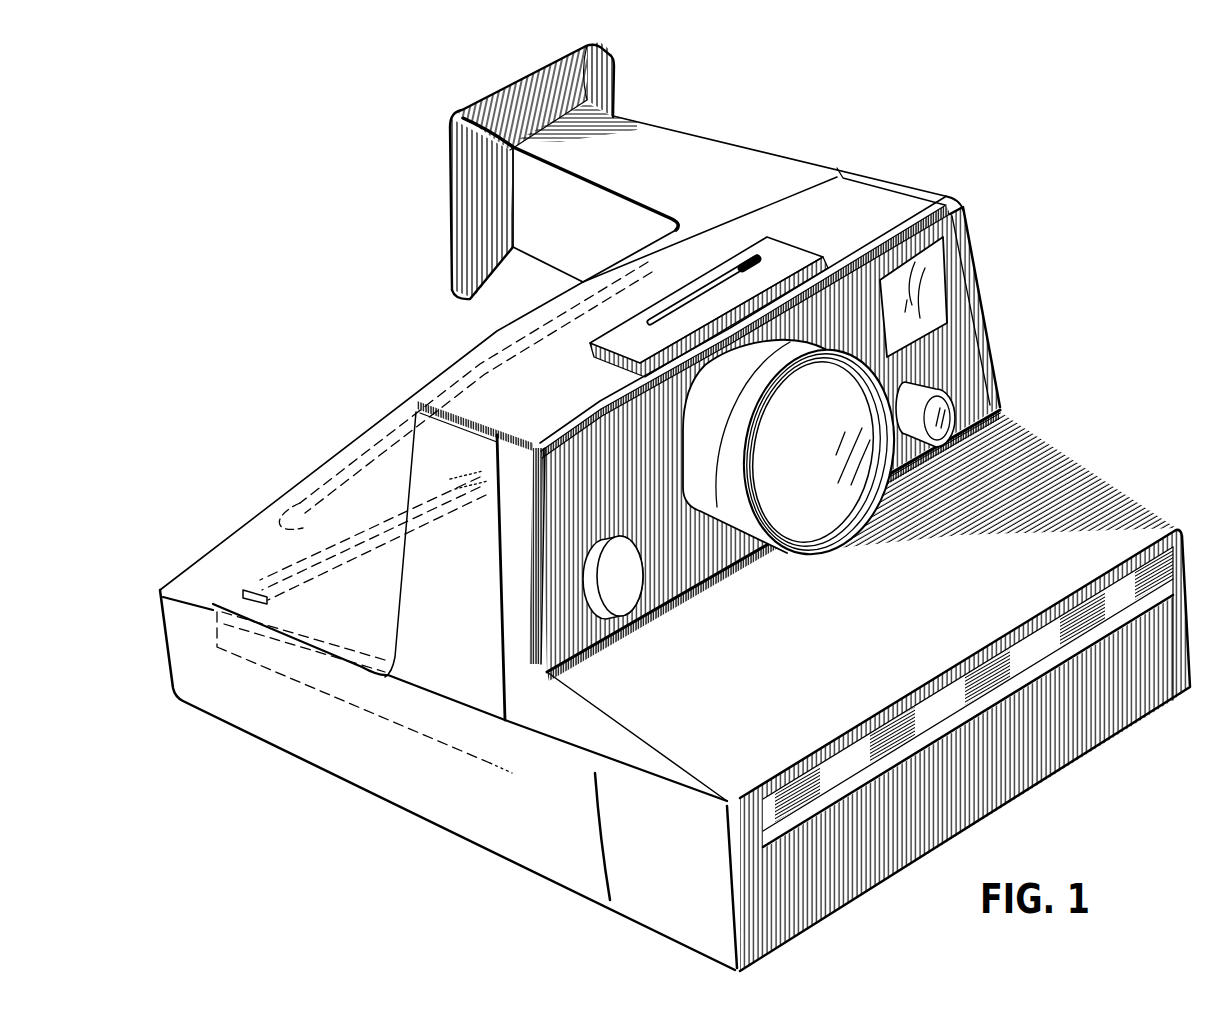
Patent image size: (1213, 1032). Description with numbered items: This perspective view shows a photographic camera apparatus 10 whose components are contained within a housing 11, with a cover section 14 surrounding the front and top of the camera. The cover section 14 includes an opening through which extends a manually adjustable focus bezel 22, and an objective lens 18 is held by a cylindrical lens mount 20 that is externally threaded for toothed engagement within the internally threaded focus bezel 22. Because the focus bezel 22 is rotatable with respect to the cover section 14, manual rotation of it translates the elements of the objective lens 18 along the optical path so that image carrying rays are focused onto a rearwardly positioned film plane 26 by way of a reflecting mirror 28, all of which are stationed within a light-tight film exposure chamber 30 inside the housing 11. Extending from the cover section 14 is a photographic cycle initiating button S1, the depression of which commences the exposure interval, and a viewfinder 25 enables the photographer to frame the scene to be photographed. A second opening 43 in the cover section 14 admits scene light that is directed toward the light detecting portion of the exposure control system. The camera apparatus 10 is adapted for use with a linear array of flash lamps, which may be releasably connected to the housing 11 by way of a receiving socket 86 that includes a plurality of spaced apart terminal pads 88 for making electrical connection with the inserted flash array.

The photographic camera apparatus 10 is at (895, 172).
The housing 11 is at (988, 355).
The cover section 14 is at (1150, 520).
The objective lens 18 is at (795, 505).
The cylindrical lens mount 20 is at (855, 401).
The focus bezel 22 is at (733, 443).
The viewfinder 25 is at (937, 268).
The film plane 26 is at (357, 597).
The reflecting mirror 28 is at (283, 519).
The film exposure chamber 30 is at (340, 550).
The second opening 43 is at (945, 412).
The receiving socket 86 is at (709, 307).
The terminal pads 88 is at (684, 312).
The photographic cycle initiating button S1 is at (652, 606).